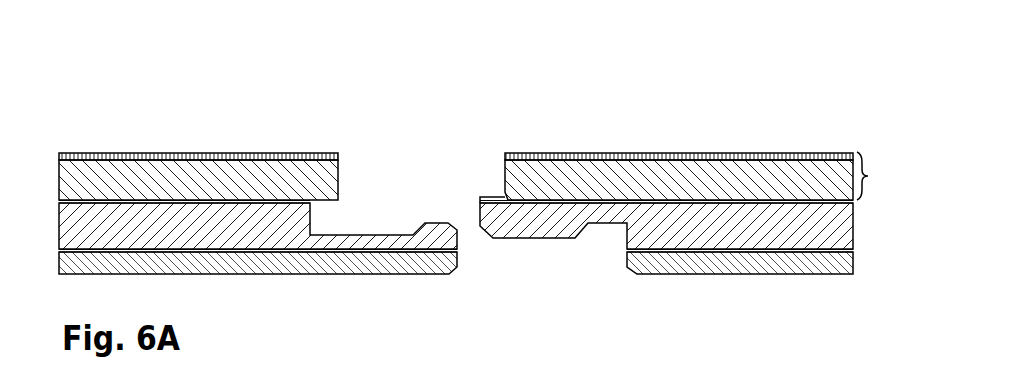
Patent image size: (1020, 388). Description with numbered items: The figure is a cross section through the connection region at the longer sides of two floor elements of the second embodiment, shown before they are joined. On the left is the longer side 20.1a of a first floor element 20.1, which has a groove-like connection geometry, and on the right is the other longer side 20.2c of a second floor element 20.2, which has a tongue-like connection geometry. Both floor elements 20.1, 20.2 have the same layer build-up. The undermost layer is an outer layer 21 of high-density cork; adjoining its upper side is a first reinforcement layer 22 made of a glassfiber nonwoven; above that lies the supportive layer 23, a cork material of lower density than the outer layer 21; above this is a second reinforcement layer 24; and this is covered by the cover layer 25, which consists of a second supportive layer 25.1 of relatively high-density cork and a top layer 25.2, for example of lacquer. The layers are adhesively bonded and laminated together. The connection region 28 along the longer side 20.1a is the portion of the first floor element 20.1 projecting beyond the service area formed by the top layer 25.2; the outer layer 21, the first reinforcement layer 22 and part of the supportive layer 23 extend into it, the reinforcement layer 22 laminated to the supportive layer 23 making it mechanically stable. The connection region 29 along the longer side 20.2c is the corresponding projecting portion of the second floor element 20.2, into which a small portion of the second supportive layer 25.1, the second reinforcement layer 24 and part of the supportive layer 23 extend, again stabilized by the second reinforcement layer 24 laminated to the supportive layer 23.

The first floor element 20.1 is at (258, 209).
The longer side of the first floor element 20.1a is at (368, 109).
The second floor element 20.2 is at (674, 200).
The longer side of the second floor element 20.2c is at (566, 88).
The outer layer 21 is at (796, 263).
The first reinforcement layer 22 is at (712, 253).
The supportive layer 23 is at (669, 239).
The second reinforcement layer 24 is at (708, 201).
The cover layer 25 is at (686, 144).
The second supportive layer 25.1 is at (657, 173).
The top layer 25.2 is at (612, 153).
The connection region 28 is at (398, 302).
The connection region 29 is at (526, 309).